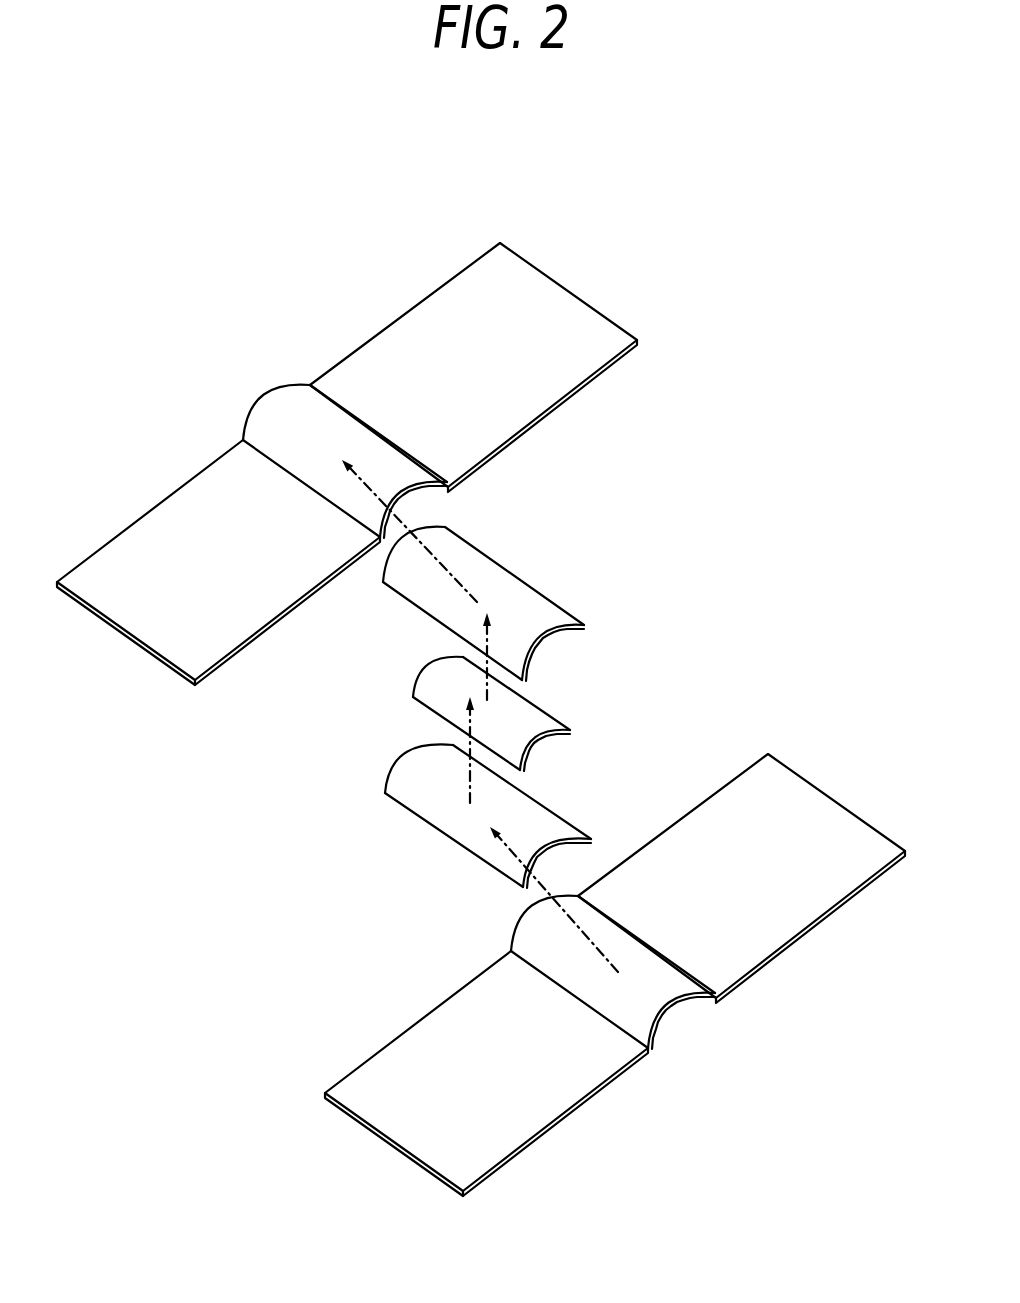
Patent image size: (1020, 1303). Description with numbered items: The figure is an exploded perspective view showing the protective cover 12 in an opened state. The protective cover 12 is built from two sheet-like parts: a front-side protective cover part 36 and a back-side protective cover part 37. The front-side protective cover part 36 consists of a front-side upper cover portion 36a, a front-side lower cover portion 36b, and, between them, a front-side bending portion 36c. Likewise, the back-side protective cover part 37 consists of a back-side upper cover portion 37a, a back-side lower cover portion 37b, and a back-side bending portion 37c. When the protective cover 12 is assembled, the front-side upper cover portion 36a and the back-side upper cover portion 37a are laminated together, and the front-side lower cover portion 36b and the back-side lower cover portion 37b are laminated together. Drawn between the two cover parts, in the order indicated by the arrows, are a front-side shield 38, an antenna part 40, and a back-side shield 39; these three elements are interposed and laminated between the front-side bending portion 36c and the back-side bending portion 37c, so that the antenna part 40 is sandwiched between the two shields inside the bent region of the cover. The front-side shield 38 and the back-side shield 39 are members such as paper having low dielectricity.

The protective cover 12 is at (440, 228).
The front-side protective cover part 36 is at (392, 308).
The front-side upper cover portion 36a is at (527, 358).
The front-side lower cover portion 36b is at (188, 507).
The front-side bending portion 36c is at (292, 408).
The back-side protective cover part 37 is at (710, 776).
The back-side upper cover portion 37a is at (797, 847).
The back-side lower cover portion 37b is at (442, 1043).
The back-side bending portion 37c is at (652, 985).
The front-side shield 38 is at (413, 582).
The back-side shield 39 is at (428, 793).
The antenna part 40 is at (427, 680).